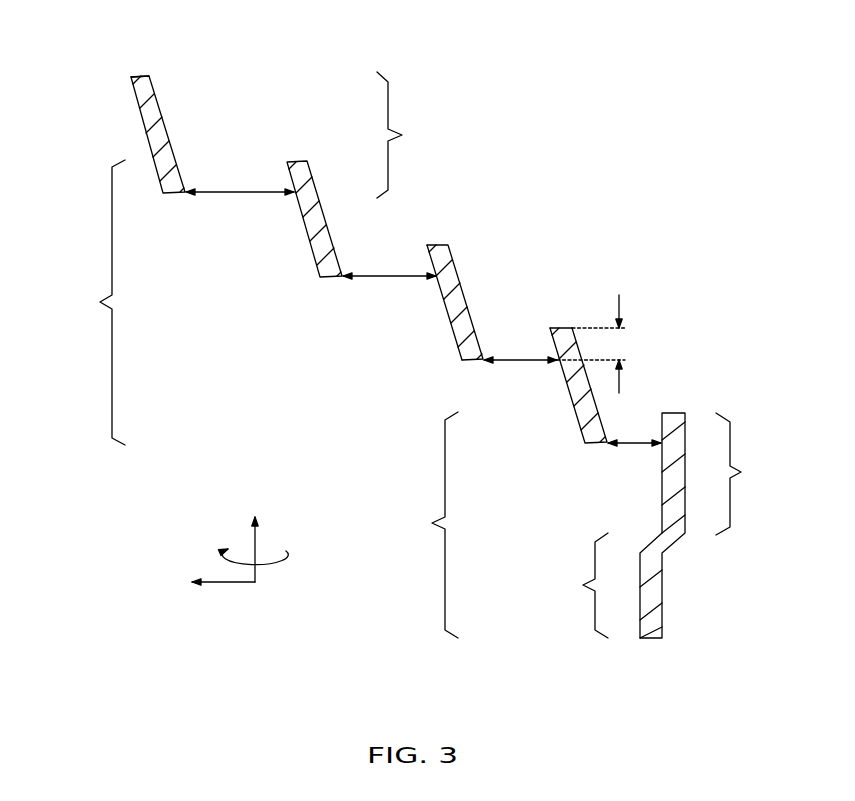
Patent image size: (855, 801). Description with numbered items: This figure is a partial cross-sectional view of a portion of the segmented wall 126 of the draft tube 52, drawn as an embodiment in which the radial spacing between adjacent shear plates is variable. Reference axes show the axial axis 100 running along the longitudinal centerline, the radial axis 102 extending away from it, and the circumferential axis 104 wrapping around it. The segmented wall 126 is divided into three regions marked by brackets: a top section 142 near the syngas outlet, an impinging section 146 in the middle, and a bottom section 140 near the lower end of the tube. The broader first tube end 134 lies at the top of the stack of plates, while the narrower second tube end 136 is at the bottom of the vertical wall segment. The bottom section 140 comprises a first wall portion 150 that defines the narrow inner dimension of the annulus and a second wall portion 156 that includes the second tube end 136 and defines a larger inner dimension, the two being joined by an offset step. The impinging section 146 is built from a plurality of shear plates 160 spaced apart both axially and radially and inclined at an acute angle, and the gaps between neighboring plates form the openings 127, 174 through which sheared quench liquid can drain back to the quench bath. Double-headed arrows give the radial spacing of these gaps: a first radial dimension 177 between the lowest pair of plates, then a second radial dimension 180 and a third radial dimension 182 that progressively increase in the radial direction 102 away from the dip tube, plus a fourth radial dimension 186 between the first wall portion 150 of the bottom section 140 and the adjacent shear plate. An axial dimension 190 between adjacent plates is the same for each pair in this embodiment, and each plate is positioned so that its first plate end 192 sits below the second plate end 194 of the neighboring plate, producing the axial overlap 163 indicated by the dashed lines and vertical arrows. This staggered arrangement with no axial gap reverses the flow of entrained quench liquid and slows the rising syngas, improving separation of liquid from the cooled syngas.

The draft tube 52 is at (537, 70).
The axial axis 100 is at (257, 541).
The radial axis 102 is at (232, 583).
The circumferential axis 104 is at (267, 566).
The segmented wall 126 is at (113, 98).
The openings 127 is at (417, 275).
The plurality of openings 174 is at (228, 142).
The first tube end 134 is at (141, 77).
The second tube end 136 is at (652, 638).
The bottom section 140 is at (426, 525).
The top section 142 is at (406, 135).
The impinging section 146 is at (94, 302).
The first wall portion 150 is at (744, 474).
The second wall portion 156 is at (577, 585).
The plurality of shear plates 160 is at (318, 192).
The axial overlap 163 is at (637, 341).
The axial dimension 190 is at (620, 305).
The first radial dimension 177 is at (525, 362).
The second radial dimension 180 is at (392, 280).
The third radial dimension 182 is at (242, 196).
The fourth radial dimension 186 is at (640, 443).
The first plate end 192 is at (468, 360).
The second plate end 194 is at (567, 327).